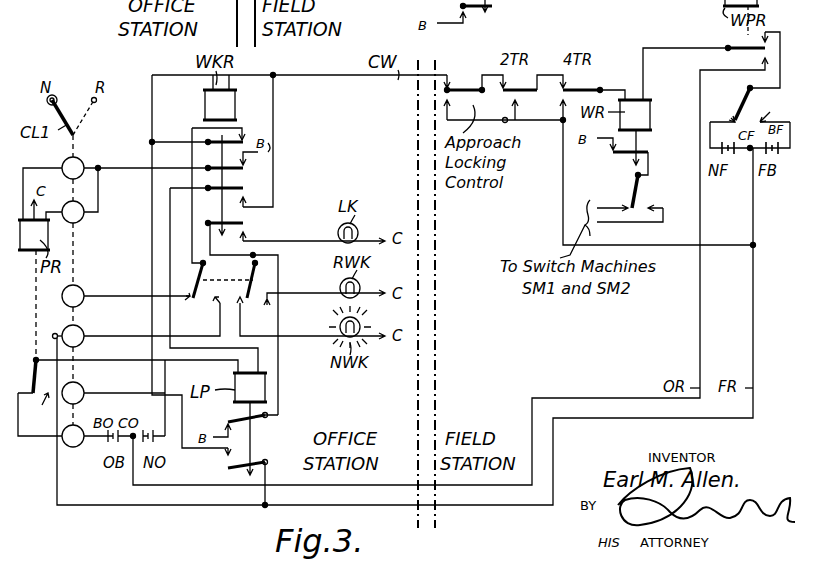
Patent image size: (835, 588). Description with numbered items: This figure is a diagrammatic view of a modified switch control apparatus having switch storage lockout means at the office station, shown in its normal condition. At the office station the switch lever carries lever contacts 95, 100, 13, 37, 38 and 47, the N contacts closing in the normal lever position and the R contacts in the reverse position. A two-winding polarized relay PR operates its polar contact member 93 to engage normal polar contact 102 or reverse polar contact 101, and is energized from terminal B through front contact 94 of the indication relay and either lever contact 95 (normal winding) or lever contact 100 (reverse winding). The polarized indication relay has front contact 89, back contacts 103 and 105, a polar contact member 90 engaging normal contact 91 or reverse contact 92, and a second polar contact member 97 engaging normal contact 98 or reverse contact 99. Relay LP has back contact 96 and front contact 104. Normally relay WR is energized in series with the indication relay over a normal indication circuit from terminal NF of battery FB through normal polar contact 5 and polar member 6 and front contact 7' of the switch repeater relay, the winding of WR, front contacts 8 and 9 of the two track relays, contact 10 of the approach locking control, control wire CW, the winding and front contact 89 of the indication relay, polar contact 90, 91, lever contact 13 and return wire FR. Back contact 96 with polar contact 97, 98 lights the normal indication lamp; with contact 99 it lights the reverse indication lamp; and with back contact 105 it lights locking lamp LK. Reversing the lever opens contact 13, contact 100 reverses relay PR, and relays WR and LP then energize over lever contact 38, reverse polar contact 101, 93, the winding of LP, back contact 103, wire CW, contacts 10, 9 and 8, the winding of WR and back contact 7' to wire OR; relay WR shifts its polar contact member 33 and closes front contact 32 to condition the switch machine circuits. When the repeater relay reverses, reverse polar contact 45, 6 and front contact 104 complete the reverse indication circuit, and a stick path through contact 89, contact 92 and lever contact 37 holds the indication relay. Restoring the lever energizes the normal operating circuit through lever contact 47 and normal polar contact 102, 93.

The lever contact 95 is at (82, 160).
The lever contact 100 is at (80, 220).
The lever contact 13 is at (82, 288).
The lever contact 37 is at (82, 328).
The lever contact 38 is at (82, 385).
The lever contact 47 is at (68, 446).
The polar contact member 93 is at (32, 360).
The normal polar contact 102 is at (36, 380).
The reverse polar contact 101 is at (33, 408).
The front contact 89 is at (218, 148).
The front contact 94 is at (244, 172).
The back contact 103 is at (214, 194).
The back contact 105 is at (245, 222).
The polar contact member 90 is at (214, 280).
The normal polar contact 91 is at (188, 305).
The reverse polar contact 92 is at (210, 311).
The polar contact member 97 is at (242, 280).
The normal polar contact 98 is at (310, 318).
The reverse polar contact 99 is at (267, 310).
The back contact 96 is at (236, 420).
The front contact 104 is at (226, 466).
The approach locking contact 10 is at (464, 79).
The front contact of relay 2TR 9 is at (520, 81).
The front contact of relay 4TR 8 is at (581, 81).
The front and back contact of relay WPR 7' is at (750, 61).
The polar contact member 6 is at (745, 94).
The normal polar contact 5 is at (735, 112).
The reverse polar contact 45 is at (773, 110).
The front contact 32 is at (620, 156).
The polar contact member 33 is at (636, 190).